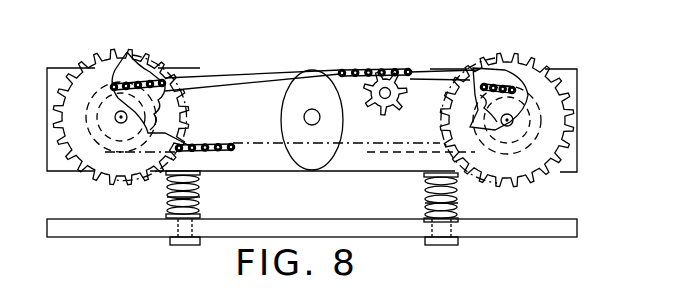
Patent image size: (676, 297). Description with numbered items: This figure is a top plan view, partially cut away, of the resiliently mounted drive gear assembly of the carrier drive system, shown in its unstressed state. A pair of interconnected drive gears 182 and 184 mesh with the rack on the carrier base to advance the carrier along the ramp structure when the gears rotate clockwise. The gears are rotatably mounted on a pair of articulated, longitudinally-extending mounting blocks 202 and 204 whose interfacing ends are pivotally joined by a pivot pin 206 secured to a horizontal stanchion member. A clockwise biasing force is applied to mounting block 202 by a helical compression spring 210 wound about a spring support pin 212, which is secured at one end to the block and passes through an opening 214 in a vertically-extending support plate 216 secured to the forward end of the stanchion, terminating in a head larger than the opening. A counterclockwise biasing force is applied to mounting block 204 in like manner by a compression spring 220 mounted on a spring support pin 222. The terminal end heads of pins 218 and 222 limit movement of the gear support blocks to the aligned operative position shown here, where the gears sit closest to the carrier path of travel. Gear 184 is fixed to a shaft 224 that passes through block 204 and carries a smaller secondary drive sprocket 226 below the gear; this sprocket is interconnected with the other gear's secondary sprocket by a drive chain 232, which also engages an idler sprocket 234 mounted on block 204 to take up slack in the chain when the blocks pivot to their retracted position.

The drive gear 182 is at (103, 50).
The drive gear 184 is at (525, 58).
The mounting block 202 is at (173, 71).
The mounting block 204 is at (577, 75).
The pivot pin 206 is at (316, 117).
The helical compression spring 210 is at (199, 193).
The spring support pin 212 is at (167, 198).
The opening 214 is at (192, 225).
The support plate 216 is at (385, 239).
The pin 218 is at (173, 246).
The compression spring 220 is at (458, 201).
The spring support pin 222 is at (442, 203).
The shaft 224 is at (512, 122).
The secondary drive sprocket 226 is at (483, 112).
The drive chain 232 is at (379, 71).
The idler sprocket 234 is at (362, 128).